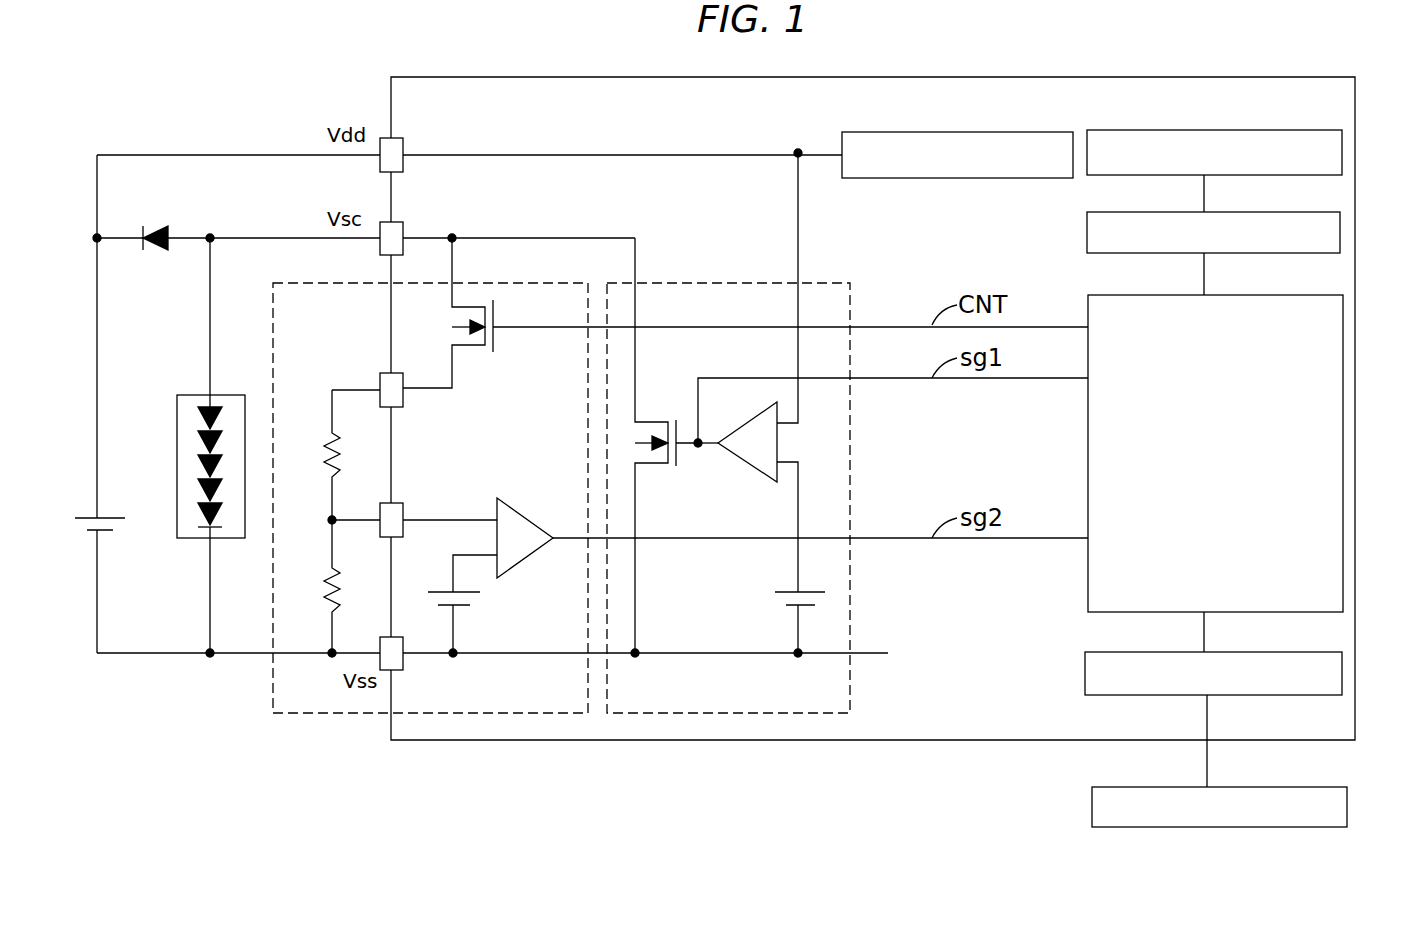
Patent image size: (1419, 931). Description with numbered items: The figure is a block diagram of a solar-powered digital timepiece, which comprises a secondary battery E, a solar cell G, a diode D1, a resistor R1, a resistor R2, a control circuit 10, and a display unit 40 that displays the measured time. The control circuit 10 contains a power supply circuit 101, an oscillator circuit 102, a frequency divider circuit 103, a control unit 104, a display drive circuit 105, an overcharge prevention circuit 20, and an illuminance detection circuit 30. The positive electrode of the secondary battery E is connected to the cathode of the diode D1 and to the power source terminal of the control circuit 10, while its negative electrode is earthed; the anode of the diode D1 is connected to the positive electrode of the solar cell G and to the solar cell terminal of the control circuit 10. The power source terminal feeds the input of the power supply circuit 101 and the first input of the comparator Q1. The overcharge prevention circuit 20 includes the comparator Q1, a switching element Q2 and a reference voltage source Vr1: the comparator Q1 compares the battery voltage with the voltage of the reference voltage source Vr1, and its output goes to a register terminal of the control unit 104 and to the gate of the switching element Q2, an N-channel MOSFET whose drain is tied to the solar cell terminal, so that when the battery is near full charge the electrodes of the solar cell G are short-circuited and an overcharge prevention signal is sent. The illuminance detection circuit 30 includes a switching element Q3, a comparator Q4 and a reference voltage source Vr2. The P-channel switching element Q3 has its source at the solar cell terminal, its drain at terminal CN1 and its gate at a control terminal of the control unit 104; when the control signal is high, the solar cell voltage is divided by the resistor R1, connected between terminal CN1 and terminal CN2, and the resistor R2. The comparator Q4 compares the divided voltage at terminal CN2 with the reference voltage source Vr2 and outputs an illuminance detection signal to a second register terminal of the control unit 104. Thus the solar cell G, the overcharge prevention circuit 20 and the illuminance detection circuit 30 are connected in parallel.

The control circuit 10 is at (1282, 77).
The overcharge prevention circuit 20 is at (688, 283).
The illuminance detection circuit 30 is at (515, 283).
The display unit 40 is at (1240, 787).
The power supply circuit 101 is at (1003, 132).
The oscillator circuit 102 is at (1230, 130).
The frequency divider circuit 103 is at (1232, 212).
The control unit 104 is at (1232, 295).
The display drive circuit 105 is at (1233, 652).
The diode D1 is at (154, 225).
The solar cell G is at (207, 445).
The secondary battery E is at (100, 404).
The comparator Q1 is at (891, 372).
The switching element Q2 is at (666, 445).
The switching element Q3 is at (745, 313).
The comparator Q4 is at (745, 535).
The resistor R1 is at (316, 455).
The resistor R2 is at (316, 586).
The terminal CN1 is at (367, 383).
The terminal CN2 is at (365, 507).
The reference voltage source Vr1 is at (776, 622).
The reference voltage source Vr2 is at (469, 604).